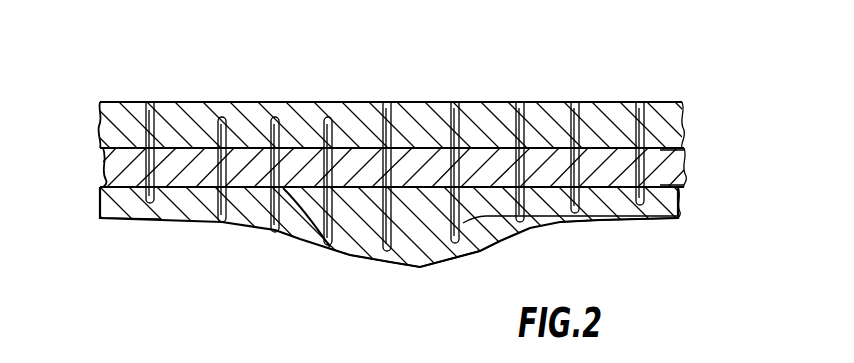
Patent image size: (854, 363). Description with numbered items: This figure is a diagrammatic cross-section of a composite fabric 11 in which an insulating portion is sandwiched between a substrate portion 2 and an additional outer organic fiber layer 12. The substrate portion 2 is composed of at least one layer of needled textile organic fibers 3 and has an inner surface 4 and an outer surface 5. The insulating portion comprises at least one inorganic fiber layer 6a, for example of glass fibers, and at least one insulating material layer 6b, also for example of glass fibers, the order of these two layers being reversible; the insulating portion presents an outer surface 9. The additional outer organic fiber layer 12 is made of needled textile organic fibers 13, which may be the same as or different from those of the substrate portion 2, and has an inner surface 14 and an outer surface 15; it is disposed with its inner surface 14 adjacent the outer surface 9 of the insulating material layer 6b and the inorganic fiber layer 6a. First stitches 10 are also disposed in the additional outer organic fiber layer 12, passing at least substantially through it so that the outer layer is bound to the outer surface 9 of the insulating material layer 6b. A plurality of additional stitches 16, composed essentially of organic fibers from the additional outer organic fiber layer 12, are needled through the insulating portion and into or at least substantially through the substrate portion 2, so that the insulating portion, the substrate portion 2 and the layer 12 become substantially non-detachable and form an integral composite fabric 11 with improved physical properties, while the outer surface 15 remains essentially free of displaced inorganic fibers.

The substrate portion 2 is at (683, 130).
The needled textile organic fibers 3 is at (110, 127).
The inner surface 4 is at (110, 163).
The outer surface 5 is at (114, 102).
The inorganic fiber layer 6a is at (122, 178).
The insulating material layer 6b is at (362, 220).
The outer surface 9 is at (485, 218).
The first stitches 10 is at (455, 103).
The composite fabric 11 is at (598, 94).
The additional outer organic fiber layer 12 is at (680, 207).
The needled textile organic fibers 13 is at (589, 210).
The inner surface 14 is at (685, 172).
The outer surface 15 is at (423, 267).
The additional stitches 16 is at (327, 252).